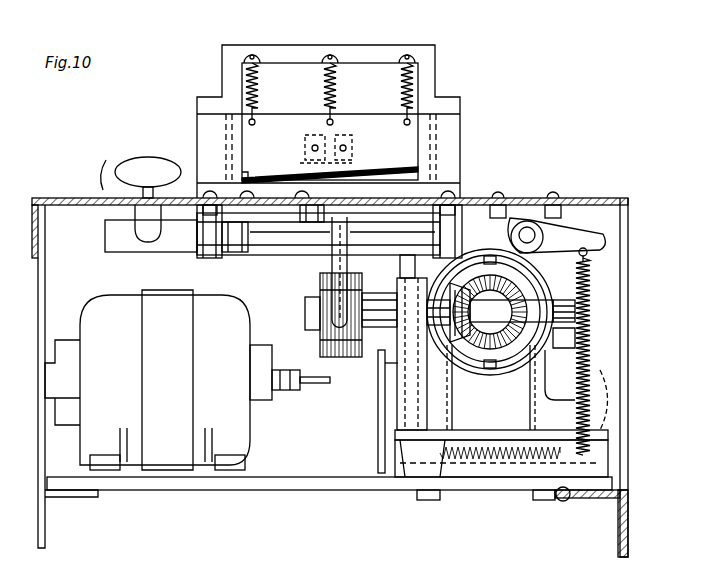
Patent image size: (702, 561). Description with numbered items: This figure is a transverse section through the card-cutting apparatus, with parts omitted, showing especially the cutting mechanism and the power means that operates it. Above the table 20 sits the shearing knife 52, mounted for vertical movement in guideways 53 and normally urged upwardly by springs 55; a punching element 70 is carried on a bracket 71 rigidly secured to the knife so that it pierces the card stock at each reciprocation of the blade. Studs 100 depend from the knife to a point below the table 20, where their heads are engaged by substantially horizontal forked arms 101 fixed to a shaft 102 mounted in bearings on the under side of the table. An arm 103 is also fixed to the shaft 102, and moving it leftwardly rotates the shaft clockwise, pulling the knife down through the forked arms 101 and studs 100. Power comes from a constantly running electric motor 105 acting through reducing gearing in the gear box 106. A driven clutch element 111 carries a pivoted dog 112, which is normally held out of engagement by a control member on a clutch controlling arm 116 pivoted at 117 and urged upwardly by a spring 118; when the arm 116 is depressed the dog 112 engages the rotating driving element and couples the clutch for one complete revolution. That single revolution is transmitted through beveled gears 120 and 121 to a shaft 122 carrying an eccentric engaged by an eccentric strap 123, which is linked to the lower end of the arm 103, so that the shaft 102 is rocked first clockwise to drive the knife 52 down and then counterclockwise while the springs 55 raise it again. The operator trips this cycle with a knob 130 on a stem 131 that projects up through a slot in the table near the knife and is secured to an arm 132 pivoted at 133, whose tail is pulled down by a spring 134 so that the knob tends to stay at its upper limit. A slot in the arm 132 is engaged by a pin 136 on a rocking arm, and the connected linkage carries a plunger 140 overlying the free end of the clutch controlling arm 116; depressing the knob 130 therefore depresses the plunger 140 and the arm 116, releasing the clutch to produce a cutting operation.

The table 20 is at (68, 197).
The shearing knife 52 is at (330, 121).
The guideways 53 is at (472, 132).
The springs 55 is at (257, 90).
The punching element 70 is at (308, 170).
The bracket 71 is at (305, 140).
The studs 100 is at (222, 232).
The forked arms 101 is at (452, 248).
The shaft 102 is at (263, 254).
The arm 103 is at (333, 258).
The electric motor 105 is at (110, 300).
The gear box 106 is at (593, 291).
The clutch element 111 is at (580, 348).
The pivoted dog 112 is at (480, 403).
The clutch controlling arm 116 is at (395, 397).
The pivot 117 is at (600, 366).
The spring 118 is at (510, 462).
The beveled gear 120 is at (501, 312).
The beveled gear 121 is at (490, 312).
The shaft 122 is at (382, 300).
The eccentric strap 123 is at (325, 355).
The knob 130 is at (150, 158).
The stem 131 is at (101, 160).
The arm 132 is at (105, 237).
The pivot 133 is at (542, 226).
The spring 134 is at (596, 270).
The pin 136 is at (330, 206).
The plunger 140 is at (405, 382).